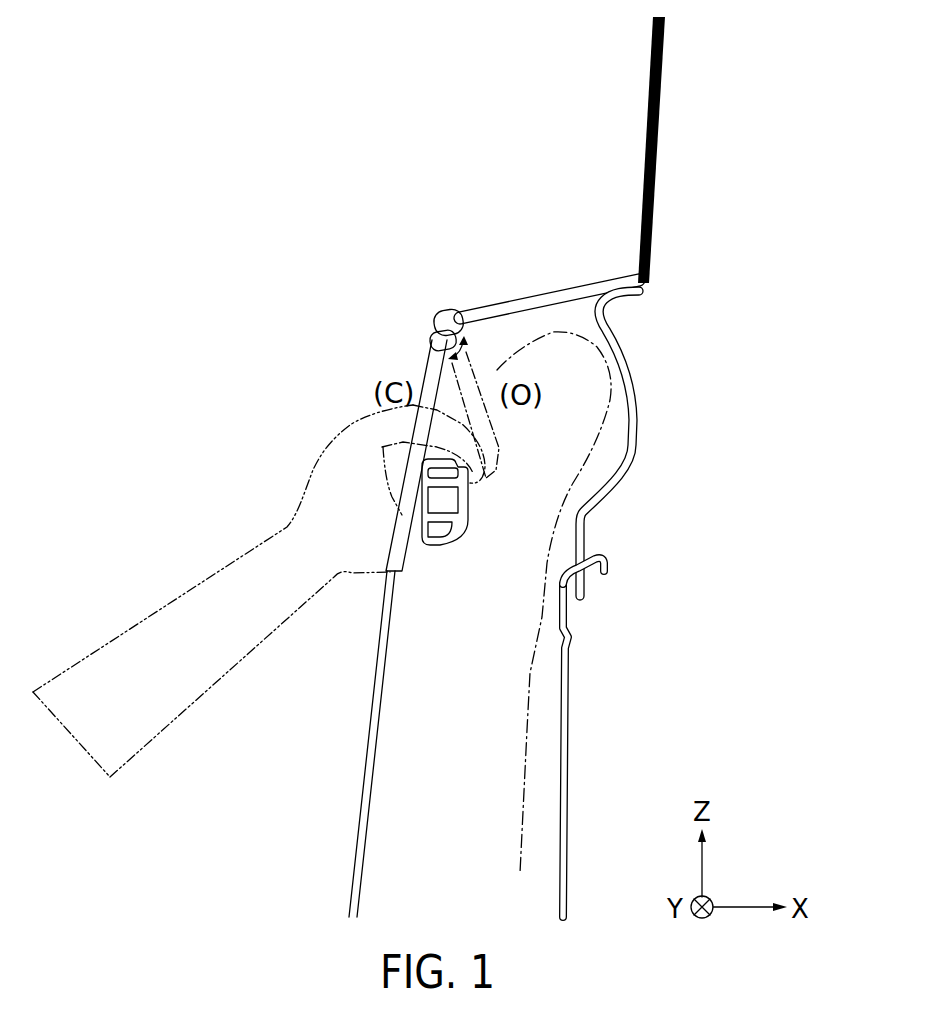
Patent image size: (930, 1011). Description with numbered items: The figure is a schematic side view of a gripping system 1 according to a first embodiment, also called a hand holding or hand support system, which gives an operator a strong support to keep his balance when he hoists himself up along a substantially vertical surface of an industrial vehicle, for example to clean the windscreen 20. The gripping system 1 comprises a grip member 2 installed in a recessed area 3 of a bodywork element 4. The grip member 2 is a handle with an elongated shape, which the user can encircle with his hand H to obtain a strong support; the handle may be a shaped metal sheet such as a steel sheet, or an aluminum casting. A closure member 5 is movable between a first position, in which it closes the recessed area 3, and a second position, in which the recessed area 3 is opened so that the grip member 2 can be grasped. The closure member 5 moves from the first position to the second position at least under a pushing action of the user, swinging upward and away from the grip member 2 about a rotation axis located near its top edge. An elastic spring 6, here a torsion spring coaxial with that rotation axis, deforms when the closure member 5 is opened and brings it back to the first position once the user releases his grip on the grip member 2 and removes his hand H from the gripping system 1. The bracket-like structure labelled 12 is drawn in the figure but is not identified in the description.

The gripping system 1 is at (357, 210).
The windscreen 20 is at (640, 191).
The bracket 12 is at (590, 450).
The grip member 2 is at (447, 497).
The recessed area 3 is at (493, 553).
The bodywork element 4 is at (373, 700).
The closure member 5 is at (427, 367).
The elastic spring 6 is at (449, 310).
The hand H is at (342, 490).